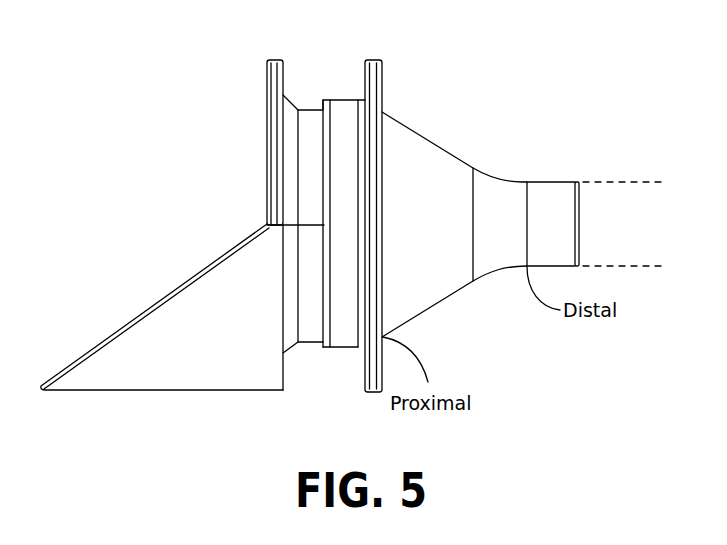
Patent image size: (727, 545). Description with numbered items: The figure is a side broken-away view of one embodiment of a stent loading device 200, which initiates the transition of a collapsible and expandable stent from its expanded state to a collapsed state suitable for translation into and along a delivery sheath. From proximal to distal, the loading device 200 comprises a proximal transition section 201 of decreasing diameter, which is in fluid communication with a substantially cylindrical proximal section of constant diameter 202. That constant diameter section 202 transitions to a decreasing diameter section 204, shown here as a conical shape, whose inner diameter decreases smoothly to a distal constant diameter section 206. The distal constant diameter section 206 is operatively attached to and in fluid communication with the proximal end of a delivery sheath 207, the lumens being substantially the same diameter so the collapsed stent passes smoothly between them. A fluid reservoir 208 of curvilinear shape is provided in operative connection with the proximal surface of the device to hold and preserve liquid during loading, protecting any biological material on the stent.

The stent loading device 200 is at (438, 52).
The proximal transition section 201 is at (302, 96).
The substantially cylindrical proximal section of constant diameter 202 is at (362, 58).
The decreasing diameter section 204 is at (478, 203).
The distal constant diameter section 206 is at (528, 166).
The delivery sheath 207 is at (600, 182).
The fluid reservoir 208 is at (128, 254).